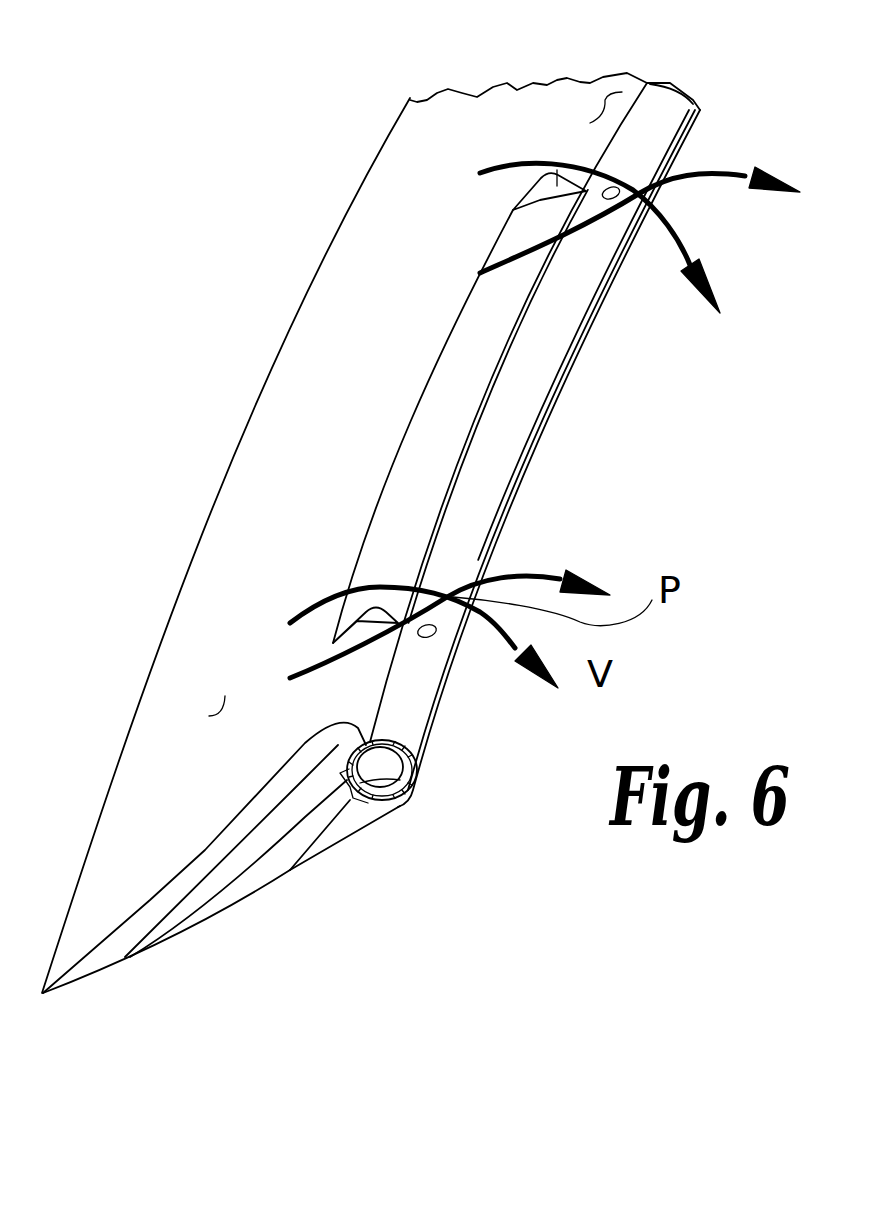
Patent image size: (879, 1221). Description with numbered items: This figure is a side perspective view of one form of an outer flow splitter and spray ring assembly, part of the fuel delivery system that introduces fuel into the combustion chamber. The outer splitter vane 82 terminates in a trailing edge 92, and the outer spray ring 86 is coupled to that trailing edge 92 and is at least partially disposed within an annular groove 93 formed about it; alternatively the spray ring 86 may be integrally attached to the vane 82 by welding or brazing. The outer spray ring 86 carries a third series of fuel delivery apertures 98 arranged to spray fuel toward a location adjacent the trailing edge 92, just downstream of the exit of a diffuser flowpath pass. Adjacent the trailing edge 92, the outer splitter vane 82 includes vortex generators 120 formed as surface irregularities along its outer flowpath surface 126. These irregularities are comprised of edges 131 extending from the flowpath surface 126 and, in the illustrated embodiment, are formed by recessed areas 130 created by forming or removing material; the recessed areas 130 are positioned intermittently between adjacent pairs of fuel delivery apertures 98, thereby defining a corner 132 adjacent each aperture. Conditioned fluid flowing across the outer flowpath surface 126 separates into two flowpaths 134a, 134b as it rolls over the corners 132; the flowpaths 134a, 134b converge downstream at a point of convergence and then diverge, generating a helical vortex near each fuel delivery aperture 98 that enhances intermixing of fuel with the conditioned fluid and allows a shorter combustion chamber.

The outer splitter vane 82 is at (226, 935).
The outer spray ring 86 is at (413, 730).
The trailing edge 92 is at (593, 123).
The annular groove 93 is at (410, 803).
The fuel delivery apertures 98 is at (617, 190).
The vortex generators 120 is at (405, 442).
The outer flowpath surface 126 is at (198, 728).
The recessed areas 130 is at (457, 367).
The edges 131 is at (557, 183).
The corner 132 is at (536, 190).
The first flowpath 134a is at (380, 587).
The second flowpath 134b is at (290, 679).